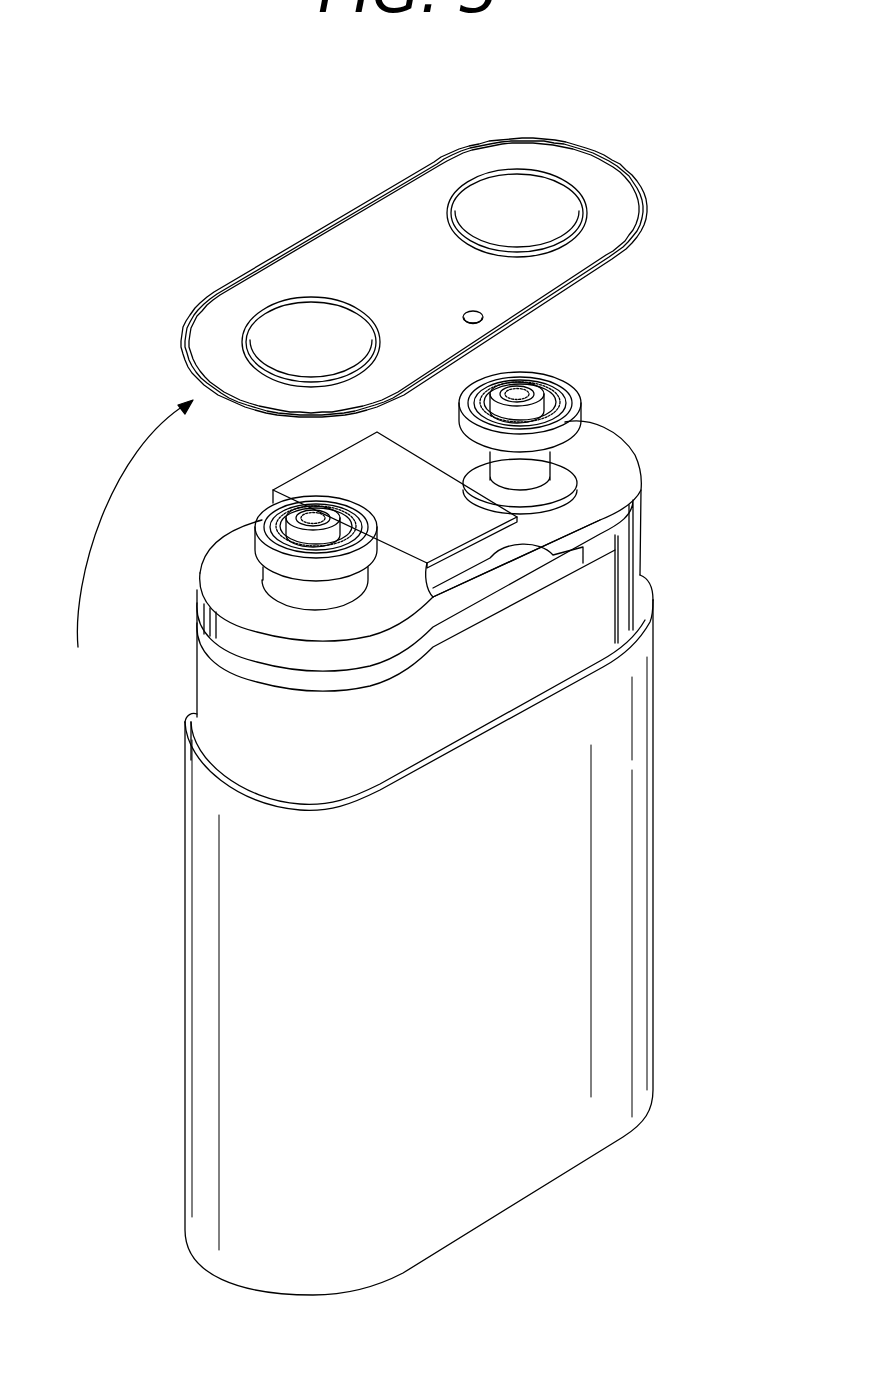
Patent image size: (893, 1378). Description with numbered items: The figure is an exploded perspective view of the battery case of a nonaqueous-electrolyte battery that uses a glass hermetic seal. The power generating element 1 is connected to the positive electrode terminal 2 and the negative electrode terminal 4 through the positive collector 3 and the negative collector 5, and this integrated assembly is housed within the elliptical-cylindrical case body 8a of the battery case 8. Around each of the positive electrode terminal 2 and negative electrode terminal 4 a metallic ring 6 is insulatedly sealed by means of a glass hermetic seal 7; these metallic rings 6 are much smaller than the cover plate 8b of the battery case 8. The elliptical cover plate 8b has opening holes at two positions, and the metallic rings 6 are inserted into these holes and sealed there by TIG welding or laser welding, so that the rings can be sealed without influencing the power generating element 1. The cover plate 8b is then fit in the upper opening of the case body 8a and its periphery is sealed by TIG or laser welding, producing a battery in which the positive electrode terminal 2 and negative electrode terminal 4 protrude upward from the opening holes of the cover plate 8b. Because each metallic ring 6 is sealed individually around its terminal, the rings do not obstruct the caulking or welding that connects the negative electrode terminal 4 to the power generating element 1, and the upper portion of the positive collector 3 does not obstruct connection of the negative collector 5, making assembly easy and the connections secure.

The power generating element 1 is at (652, 539).
The positive electrode terminal 2 is at (343, 503).
The positive collector 3 is at (227, 575).
The negative electrode terminal 4 is at (547, 373).
The negative collector 5 is at (612, 460).
The metallic ring 6 is at (377, 517).
The glass hermetic seal 7 is at (258, 504).
The battery case 8 is at (171, 724).
The case body 8a is at (207, 953).
The cover plate 8b is at (355, 245).